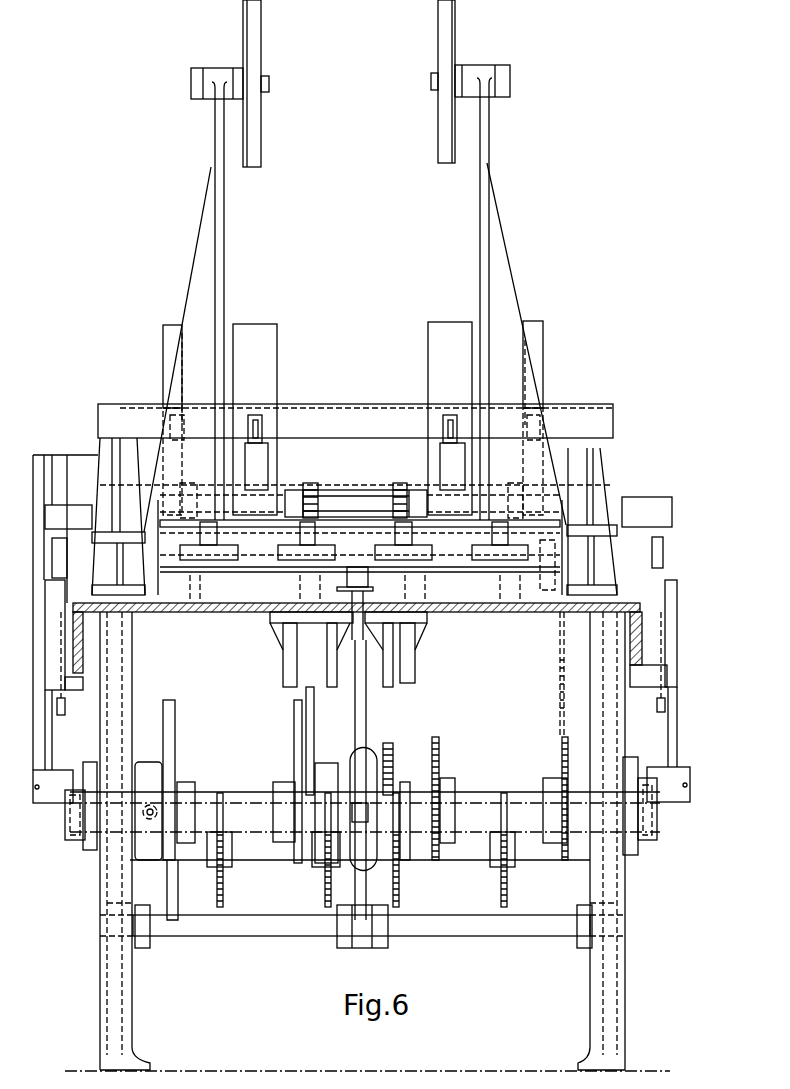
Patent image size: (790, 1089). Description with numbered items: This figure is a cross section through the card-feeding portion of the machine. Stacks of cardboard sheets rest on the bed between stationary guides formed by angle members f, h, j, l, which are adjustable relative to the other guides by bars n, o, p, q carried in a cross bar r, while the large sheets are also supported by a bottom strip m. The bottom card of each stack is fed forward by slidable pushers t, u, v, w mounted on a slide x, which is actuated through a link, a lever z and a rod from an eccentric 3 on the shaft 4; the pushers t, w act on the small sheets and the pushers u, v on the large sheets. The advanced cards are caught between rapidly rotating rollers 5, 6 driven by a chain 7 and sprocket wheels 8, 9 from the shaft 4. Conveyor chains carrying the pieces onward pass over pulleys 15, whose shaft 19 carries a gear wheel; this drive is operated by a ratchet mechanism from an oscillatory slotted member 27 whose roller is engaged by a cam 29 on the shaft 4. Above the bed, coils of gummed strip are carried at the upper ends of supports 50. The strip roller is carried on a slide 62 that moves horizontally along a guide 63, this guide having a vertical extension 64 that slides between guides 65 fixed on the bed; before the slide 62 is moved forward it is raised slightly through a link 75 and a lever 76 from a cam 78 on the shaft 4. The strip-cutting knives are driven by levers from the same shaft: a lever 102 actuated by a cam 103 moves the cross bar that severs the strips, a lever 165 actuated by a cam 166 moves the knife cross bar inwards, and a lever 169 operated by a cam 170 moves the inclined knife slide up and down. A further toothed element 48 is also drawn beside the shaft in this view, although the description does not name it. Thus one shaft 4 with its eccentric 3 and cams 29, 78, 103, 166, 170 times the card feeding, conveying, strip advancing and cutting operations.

The supports 50 is at (226, 236).
The angle member f is at (163, 352).
The angle member h is at (277, 352).
The angle member j is at (428, 362).
The angle member l is at (543, 350).
The bar n is at (184, 425).
The bar o is at (262, 428).
The bar p is at (443, 425).
The bar q is at (527, 427).
The cross bar r is at (355, 455).
The roller 5 is at (190, 483).
The guide 63 is at (358, 513).
The slide 62 is at (52, 575).
The pusher t is at (217, 540).
The pusher u is at (298, 538).
The bottom strip m is at (360, 530).
The pusher v is at (430, 538).
The pusher w is at (492, 535).
The roller 6 is at (200, 592).
The slide x is at (347, 577).
The sprocket wheel 8 is at (548, 590).
The guides 65 is at (45, 642).
The vertical extension 64 is at (65, 708).
The link 75 is at (45, 742).
The cam 78 is at (90, 762).
The lever 76 is at (65, 820).
The oscillatory slotted member 27 is at (148, 762).
The cam 29 is at (175, 718).
The pulleys 15 is at (223, 895).
The shaft 19 is at (272, 855).
The shaft 4 is at (257, 795).
The cam 166 is at (295, 775).
The lever 165 is at (294, 733).
The lever 169 is at (306, 697).
The cam 170 is at (332, 783).
The lever z is at (355, 722).
The eccentric 3 is at (352, 765).
The cam 103 is at (383, 748).
The lever 102 is at (402, 722).
The rack 48 is at (439, 880).
The sprocket wheel 9 is at (562, 757).
The chain 7 is at (560, 690).